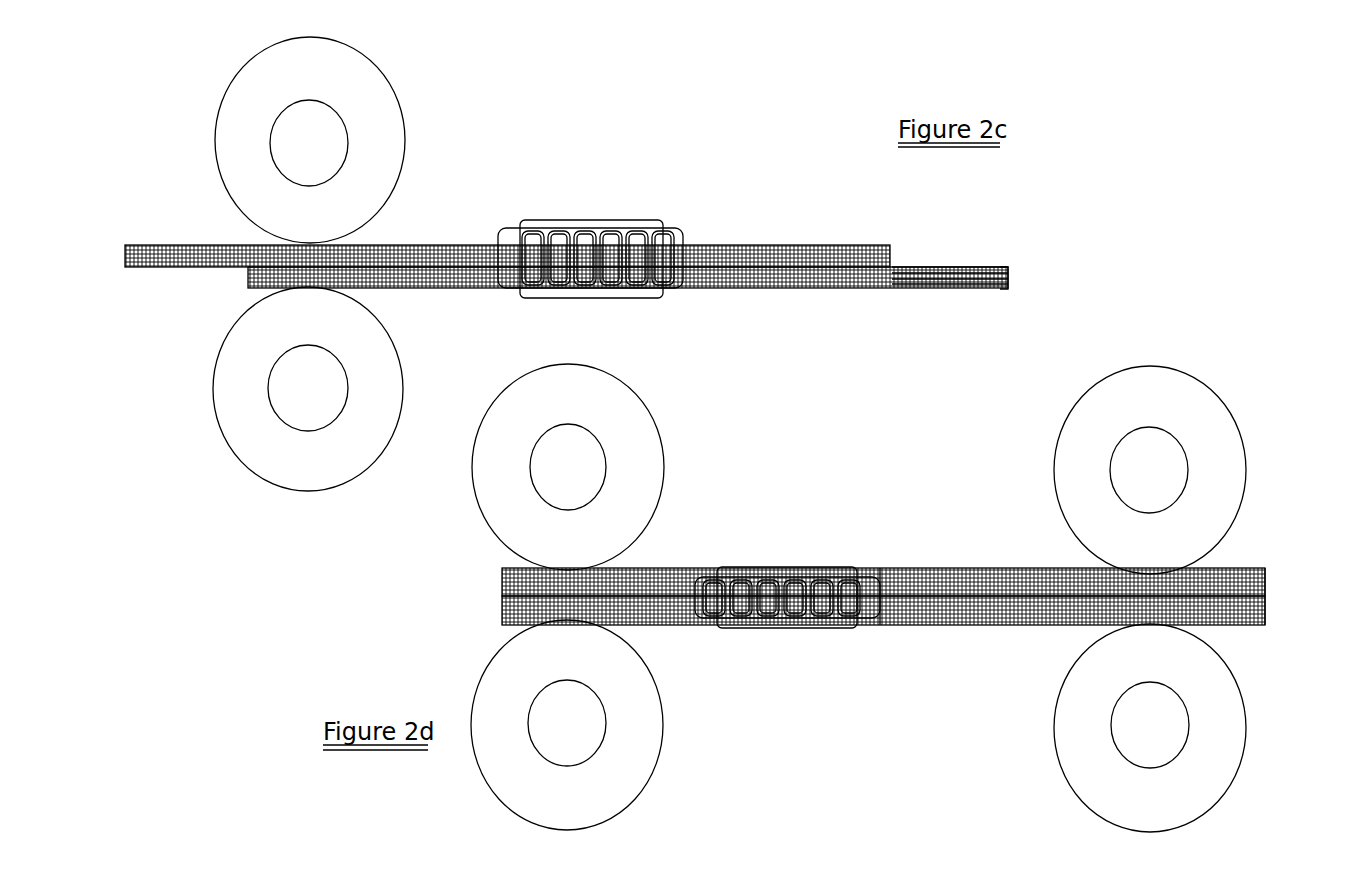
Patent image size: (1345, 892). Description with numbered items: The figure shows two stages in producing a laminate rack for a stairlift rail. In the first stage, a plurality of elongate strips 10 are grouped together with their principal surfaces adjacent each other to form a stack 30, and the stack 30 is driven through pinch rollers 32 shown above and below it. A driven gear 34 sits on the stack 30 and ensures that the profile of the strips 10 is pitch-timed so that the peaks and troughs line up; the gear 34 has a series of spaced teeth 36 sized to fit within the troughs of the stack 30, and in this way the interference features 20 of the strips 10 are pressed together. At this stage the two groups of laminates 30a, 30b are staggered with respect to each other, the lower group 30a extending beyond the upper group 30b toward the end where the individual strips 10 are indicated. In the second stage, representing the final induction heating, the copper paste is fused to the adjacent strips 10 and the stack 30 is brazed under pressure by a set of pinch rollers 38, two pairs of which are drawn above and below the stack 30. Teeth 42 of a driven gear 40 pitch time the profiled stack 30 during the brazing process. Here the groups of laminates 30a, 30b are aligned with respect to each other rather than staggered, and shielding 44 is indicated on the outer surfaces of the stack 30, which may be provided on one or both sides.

In FIG. 2C, the elongate strips 10 is at (1008, 270).
In FIG. 2C, the interference features 20 is at (935, 267).
In FIG. 2C, the stack 30 is at (607, 258).
In FIG. 2D, the stack 30 is at (822, 646).
In FIG. 2C, the first group of laminates 30a is at (860, 290).
In FIG. 2D, the first group of laminates 30a is at (502, 602).
In FIG. 2C, the second group of laminates 30b is at (858, 245).
In FIG. 2D, the second group of laminates 30b is at (502, 590).
In FIG. 2C, the pinch rollers 32 is at (385, 118).
In FIG. 2C, the driven gear 34 is at (590, 200).
In FIG. 2C, the teeth 36 is at (648, 248).
In FIG. 2D, the pinch rollers 38 is at (645, 452).
In FIG. 2D, the driven gear 40 is at (791, 597).
In FIG. 2D, the teeth 42 is at (770, 602).
In FIG. 2D, the shielding 44 is at (940, 570).